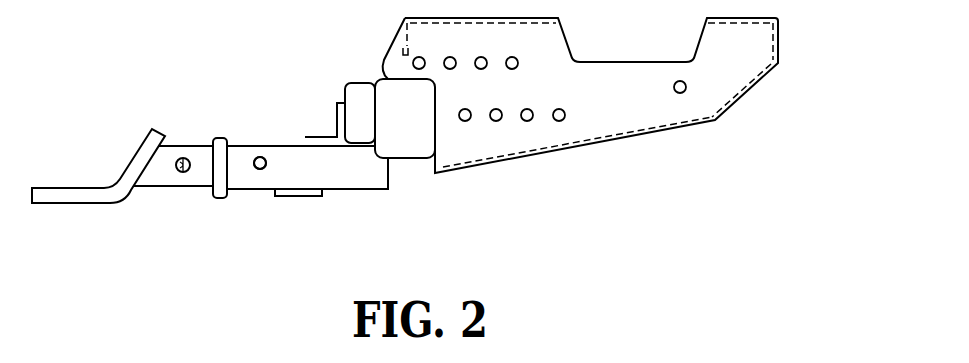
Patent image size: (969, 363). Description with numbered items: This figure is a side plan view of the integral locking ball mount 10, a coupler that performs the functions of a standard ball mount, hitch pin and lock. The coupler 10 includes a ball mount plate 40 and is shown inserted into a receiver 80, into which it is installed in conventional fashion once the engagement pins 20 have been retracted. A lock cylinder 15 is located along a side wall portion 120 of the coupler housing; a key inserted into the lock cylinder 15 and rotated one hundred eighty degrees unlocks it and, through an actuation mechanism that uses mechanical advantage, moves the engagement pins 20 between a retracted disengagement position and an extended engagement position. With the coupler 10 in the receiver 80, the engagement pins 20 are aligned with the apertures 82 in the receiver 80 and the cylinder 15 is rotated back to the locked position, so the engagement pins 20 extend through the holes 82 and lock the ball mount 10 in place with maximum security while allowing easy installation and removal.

The integral locking ball mount 10 is at (405, 186).
The lock cylinder 15 is at (188, 157).
The engagement pins 20 is at (260, 169).
The ball mount plate 40 is at (68, 198).
The receiver 80 is at (353, 177).
The apertures 82 is at (266, 159).
The side wall portion 120 is at (196, 186).